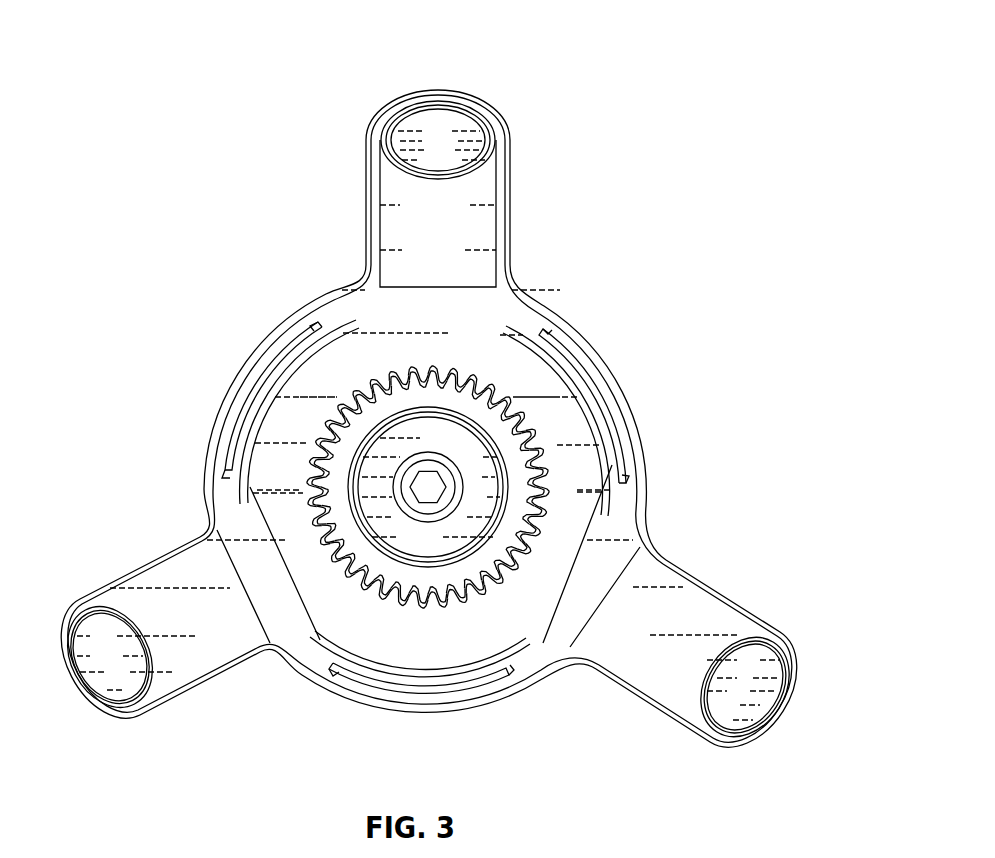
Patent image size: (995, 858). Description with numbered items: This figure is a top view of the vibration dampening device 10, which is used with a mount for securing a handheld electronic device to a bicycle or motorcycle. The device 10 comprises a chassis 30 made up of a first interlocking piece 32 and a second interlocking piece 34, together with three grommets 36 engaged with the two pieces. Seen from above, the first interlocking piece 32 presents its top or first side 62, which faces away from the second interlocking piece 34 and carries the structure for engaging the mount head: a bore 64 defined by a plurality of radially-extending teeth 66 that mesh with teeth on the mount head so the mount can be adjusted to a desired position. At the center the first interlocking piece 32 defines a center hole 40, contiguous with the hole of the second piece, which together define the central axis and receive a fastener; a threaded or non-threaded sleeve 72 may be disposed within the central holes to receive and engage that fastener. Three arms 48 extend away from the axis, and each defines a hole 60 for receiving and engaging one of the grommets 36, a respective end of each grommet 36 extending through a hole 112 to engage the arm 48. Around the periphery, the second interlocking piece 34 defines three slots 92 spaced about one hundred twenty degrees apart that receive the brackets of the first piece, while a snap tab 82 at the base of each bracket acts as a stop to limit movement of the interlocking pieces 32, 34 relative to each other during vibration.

The vibration dampening device 10 is at (566, 169).
The chassis 30 is at (643, 432).
The interlocking piece 32 is at (527, 370).
The interlocking piece 34 is at (512, 700).
The grommet 36 is at (437, 118).
The center hole 40 is at (443, 500).
The arm 48 is at (488, 198).
The hole 60 is at (474, 110).
The first side 62 is at (455, 651).
The bore 64 is at (520, 448).
The radially-extending teeth 66 is at (333, 406).
The sleeve 72 is at (450, 495).
The snap tab 82 is at (306, 327).
The slot 92 is at (225, 458).
The hole 112 is at (388, 128).